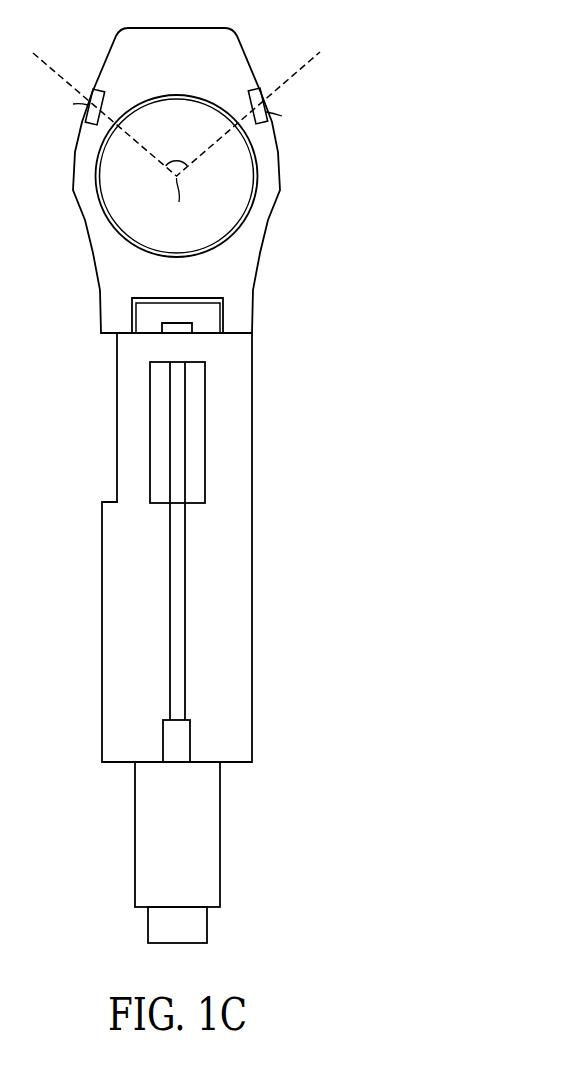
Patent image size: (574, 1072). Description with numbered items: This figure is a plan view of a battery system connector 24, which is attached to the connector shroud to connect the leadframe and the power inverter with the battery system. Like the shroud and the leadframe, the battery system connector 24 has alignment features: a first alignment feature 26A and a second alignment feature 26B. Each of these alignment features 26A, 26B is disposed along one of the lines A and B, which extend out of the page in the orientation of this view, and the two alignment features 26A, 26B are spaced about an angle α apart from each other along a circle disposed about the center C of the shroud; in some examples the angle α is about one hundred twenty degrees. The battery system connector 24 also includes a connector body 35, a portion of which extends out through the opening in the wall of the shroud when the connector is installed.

The battery system connector 24 is at (208, 485).
The first alignment feature 26A is at (103, 90).
The second alignment feature 26B is at (251, 90).
The connector body 35 is at (252, 457).